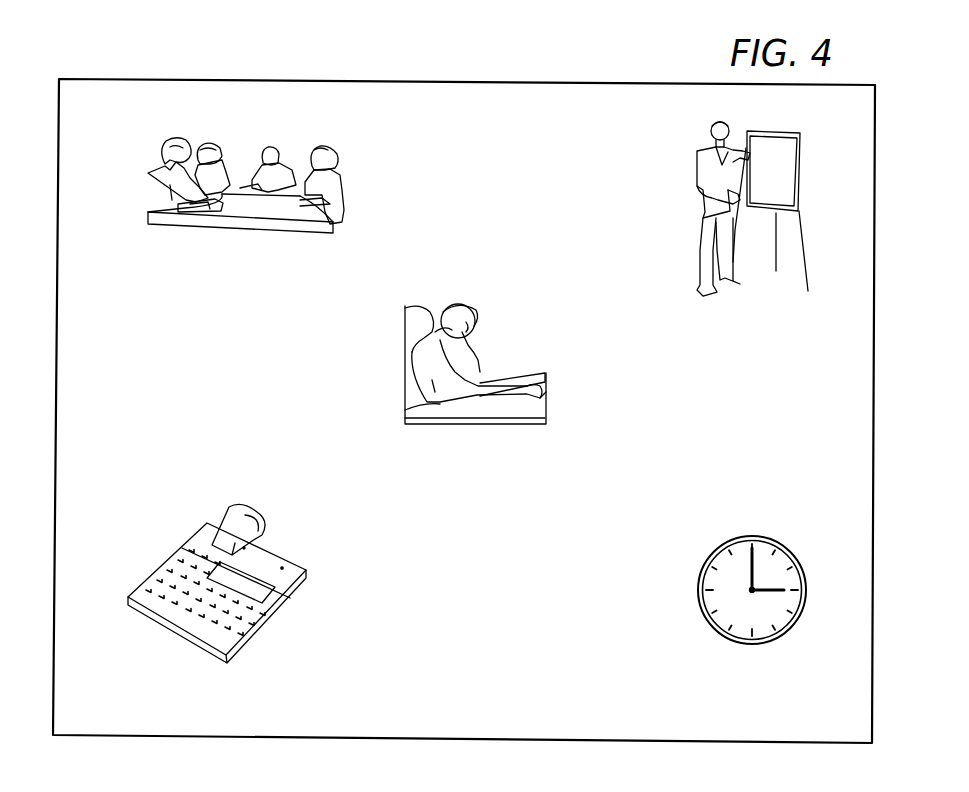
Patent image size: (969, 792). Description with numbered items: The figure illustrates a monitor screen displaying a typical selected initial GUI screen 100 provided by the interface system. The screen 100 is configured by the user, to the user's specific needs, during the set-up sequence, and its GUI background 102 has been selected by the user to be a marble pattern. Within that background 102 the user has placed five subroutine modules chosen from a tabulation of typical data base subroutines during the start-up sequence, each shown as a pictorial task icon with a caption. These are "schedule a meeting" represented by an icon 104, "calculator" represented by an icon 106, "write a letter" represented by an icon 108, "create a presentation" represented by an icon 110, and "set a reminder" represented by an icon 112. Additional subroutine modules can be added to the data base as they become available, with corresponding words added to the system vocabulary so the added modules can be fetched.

The initial GUI screen 100 is at (126, 749).
The GUI background 102 is at (345, 96).
The schedule a meeting icon 104 is at (343, 194).
The calculator icon 106 is at (291, 560).
The write a letter icon 108 is at (400, 370).
The create a presentation icon 110 is at (695, 193).
The set a reminder icon 112 is at (700, 566).